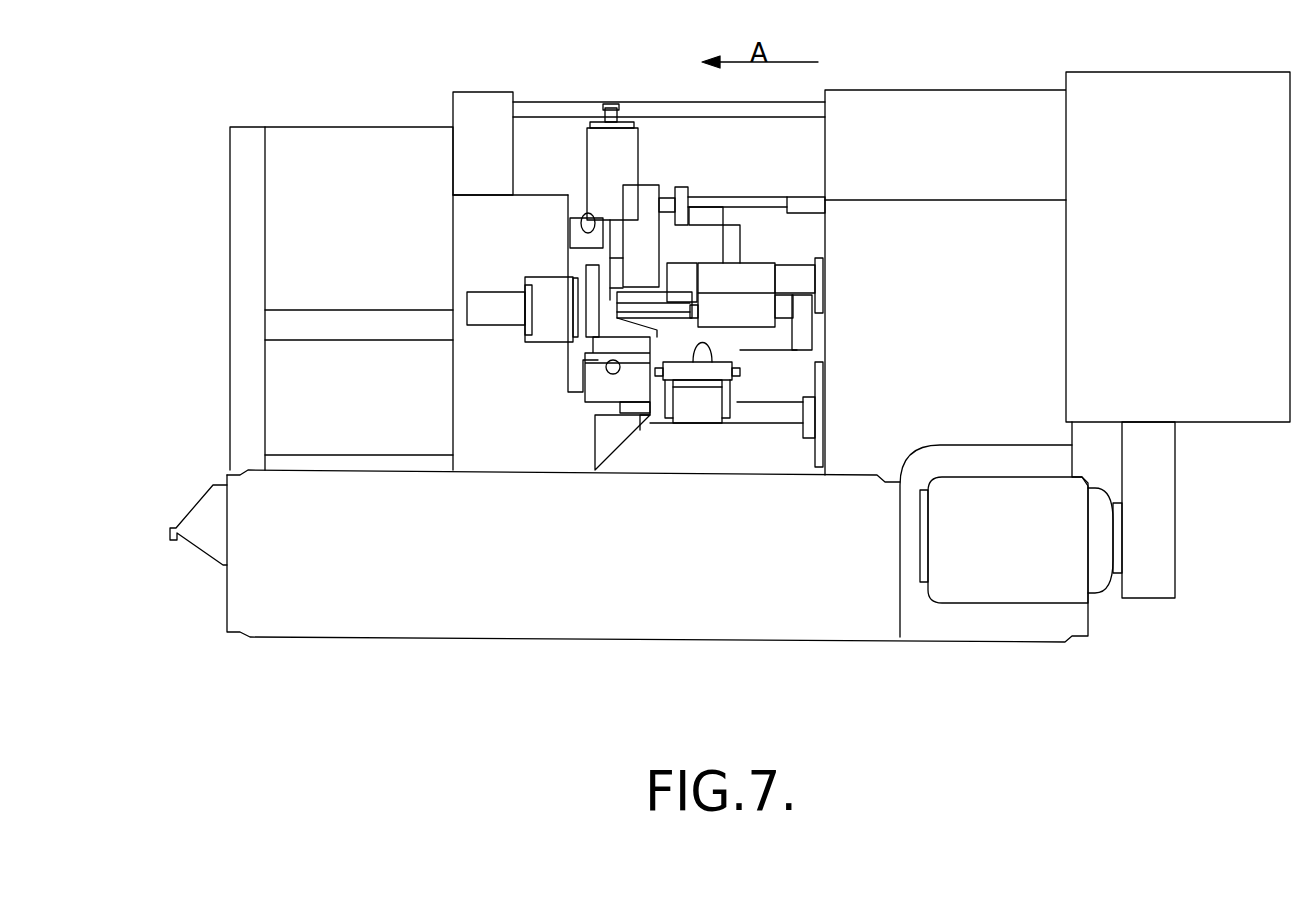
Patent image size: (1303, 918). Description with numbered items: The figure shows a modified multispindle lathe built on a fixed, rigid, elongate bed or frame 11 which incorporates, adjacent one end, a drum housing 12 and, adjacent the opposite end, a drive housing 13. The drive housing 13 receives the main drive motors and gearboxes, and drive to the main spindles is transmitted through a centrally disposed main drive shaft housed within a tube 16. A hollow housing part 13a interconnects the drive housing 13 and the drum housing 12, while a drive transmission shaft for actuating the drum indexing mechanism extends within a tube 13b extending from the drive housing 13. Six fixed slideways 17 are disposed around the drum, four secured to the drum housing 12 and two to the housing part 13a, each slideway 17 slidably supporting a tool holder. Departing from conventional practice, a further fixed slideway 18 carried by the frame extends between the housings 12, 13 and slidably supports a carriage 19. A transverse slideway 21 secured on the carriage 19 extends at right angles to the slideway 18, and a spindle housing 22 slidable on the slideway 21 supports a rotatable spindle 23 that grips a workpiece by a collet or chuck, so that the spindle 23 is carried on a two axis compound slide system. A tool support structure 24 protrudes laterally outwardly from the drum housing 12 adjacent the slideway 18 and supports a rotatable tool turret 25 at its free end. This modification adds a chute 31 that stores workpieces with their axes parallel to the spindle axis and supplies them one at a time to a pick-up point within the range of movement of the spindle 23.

The bed or frame 11 is at (366, 596).
The drum housing 12 is at (470, 243).
The drive housing 13 is at (960, 233).
The hollow housing part 13a is at (663, 150).
The tube 13b is at (782, 412).
The tube 16 is at (792, 280).
The fixed slideways 17 is at (580, 257).
The further fixed slideway 18 is at (690, 405).
The carriage 19 is at (713, 423).
The transverse slideway 21 is at (767, 337).
The spindle housing 22 is at (744, 338).
The spindle 23 is at (682, 282).
The tool support structure 24 is at (495, 312).
The tool turret 25 is at (593, 325).
The chute 31 is at (647, 204).